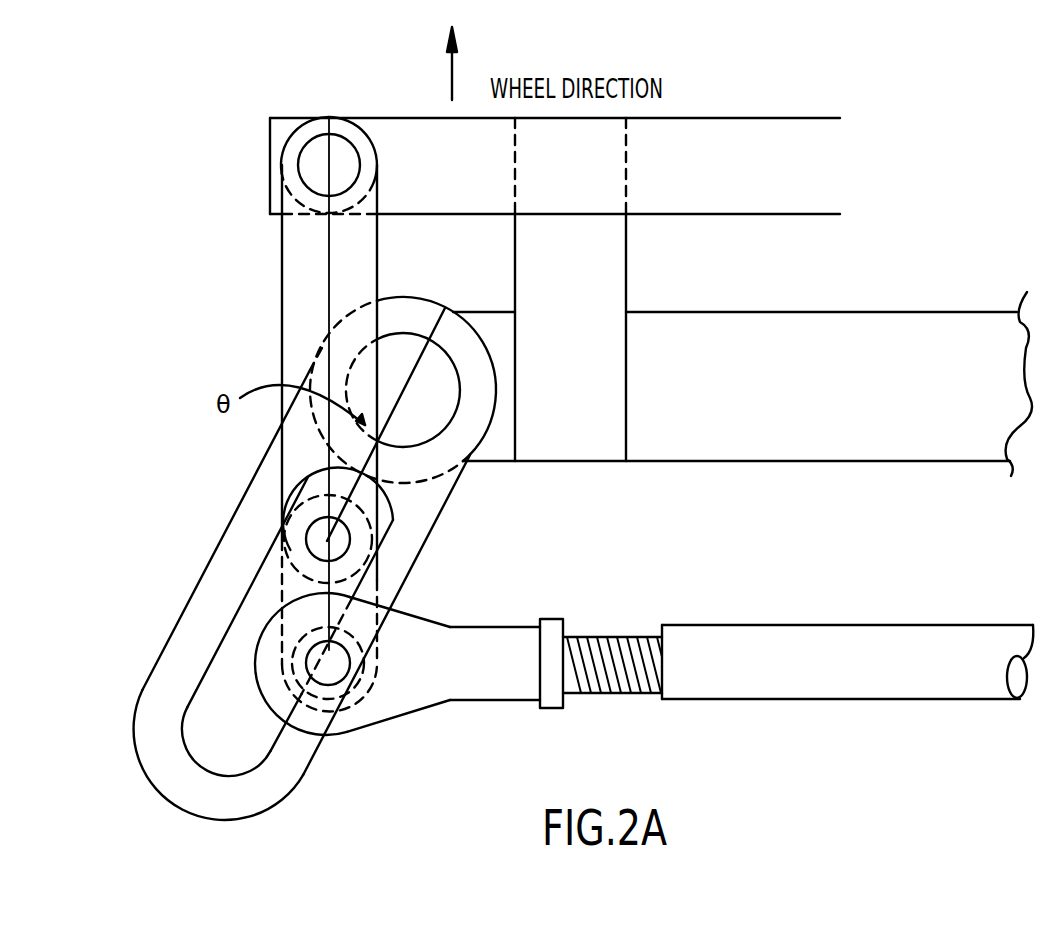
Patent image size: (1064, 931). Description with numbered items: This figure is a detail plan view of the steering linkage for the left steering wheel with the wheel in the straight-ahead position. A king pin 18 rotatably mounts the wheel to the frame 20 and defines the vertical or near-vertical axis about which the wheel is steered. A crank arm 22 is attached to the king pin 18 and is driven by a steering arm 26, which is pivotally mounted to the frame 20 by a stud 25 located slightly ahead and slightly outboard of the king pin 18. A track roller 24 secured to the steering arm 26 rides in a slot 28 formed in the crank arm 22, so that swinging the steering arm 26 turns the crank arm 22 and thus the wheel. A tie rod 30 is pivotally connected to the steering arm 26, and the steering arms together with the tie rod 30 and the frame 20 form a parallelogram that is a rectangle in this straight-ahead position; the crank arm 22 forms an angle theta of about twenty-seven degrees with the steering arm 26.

The king pin 18 is at (436, 409).
The frame 20 is at (717, 205).
The crank arm 22 is at (288, 785).
The track roller 24 is at (358, 547).
The stud 25 is at (343, 179).
The steering arm 26 is at (373, 263).
The slot 28 is at (213, 758).
The tie rod 30 is at (773, 700).